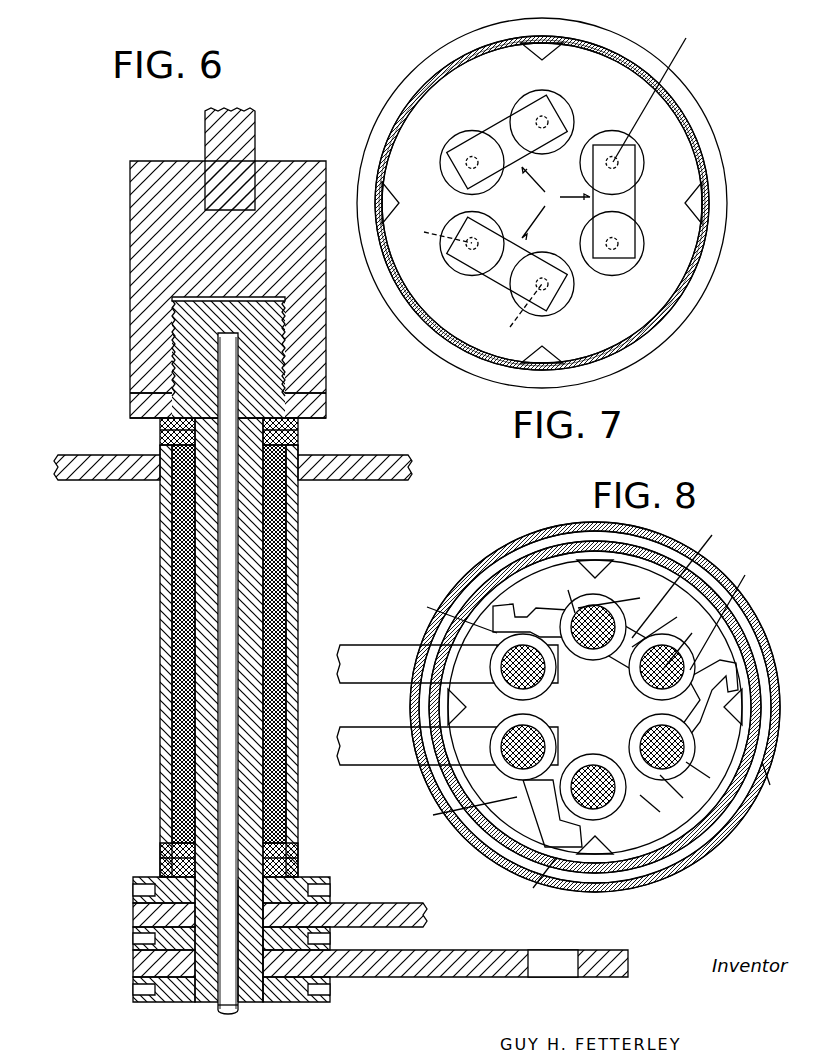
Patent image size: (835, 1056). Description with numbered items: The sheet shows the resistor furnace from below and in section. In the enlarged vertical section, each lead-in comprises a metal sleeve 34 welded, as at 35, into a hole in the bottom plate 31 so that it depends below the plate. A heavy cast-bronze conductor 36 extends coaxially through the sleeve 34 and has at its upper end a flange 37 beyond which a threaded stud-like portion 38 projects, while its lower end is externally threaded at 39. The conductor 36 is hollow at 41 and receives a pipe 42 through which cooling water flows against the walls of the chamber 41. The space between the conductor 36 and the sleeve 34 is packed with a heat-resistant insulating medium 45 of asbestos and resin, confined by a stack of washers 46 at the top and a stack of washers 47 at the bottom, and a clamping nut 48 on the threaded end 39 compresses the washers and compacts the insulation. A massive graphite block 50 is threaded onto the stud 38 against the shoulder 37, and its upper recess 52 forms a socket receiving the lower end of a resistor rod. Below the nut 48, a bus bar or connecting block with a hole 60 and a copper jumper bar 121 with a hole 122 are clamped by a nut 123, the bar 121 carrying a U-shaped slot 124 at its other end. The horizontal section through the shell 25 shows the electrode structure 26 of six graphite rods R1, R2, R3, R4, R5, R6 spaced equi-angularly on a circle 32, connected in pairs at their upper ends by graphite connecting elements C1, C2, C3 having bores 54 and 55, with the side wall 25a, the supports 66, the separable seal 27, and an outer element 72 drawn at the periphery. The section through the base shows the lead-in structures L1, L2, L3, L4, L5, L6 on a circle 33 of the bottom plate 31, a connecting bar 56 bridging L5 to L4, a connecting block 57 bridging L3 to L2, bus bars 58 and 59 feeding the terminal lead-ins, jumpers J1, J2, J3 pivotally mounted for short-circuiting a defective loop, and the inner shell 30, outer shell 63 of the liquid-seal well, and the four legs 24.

In FIG. 6, the cylindrical block 50 is at (160, 161).
In FIG. 6, the coaxial recess 52 is at (207, 165).
In FIG. 6, the threaded stud-like portion 38 is at (172, 337).
In FIG. 6, the hollow interior 41 is at (218, 342).
In FIG. 6, the flange 37 is at (133, 405).
In FIG. 6, the stack of washers 46 is at (160, 442).
In FIG. 6, the bottom plate 31 is at (80, 482).
In FIG. 7, the bottom plate 31 is at (672, 308).
In FIG. 8, the bottom plate 31 is at (692, 836).
In FIG. 6, the weld 35 is at (158, 482).
In FIG. 6, the heavy metal conductor 36 is at (200, 545).
In FIG. 8, the heavy metal conductor 36 is at (686, 645).
In FIG. 6, the metal sleeve 34 is at (162, 606).
In FIG. 8, the metal sleeve 34 is at (707, 775).
In FIG. 6, the insulating medium 45 is at (180, 652).
In FIG. 8, the insulating medium 45 is at (618, 598).
In FIG. 6, the stack of washers 47 is at (163, 858).
In FIG. 6, the clamping nut 48 is at (133, 880).
In FIG. 8, the clamping nut 48 is at (681, 792).
In FIG. 6, the hole 60 is at (190, 915).
In FIG. 6, the nut 123 is at (133, 980).
In FIG. 6, the pipe 42 is at (222, 1008).
In FIG. 6, the hole 122 is at (263, 960).
In FIG. 6, the threaded lower end 39 is at (270, 1005).
In FIG. 6, the heavy copper bar 121 is at (390, 978).
In FIG. 8, the heavy copper bar 121 is at (601, 698).
In FIG. 6, the U-shaped slot 124 is at (548, 958).
In FIG. 8, the U-shaped slot 124 is at (581, 729).
In FIG. 7, the circle 32 is at (661, 92).
In FIG. 7, the internal supports 66 is at (552, 50).
In FIG. 7, the resistor rod R1 is at (472, 243).
In FIG. 7, the resistor rod R2 is at (542, 284).
In FIG. 7, the resistor rod R3 is at (613, 243).
In FIG. 7, the resistor rod R4 is at (613, 162).
In FIG. 7, the resistor rod R5 is at (542, 122).
In FIG. 7, the resistor rod R6 is at (472, 162).
In FIG. 7, the connecting element C1 is at (495, 280).
In FIG. 7, the connecting element C2 is at (636, 190).
In FIG. 7, the connecting element C3 is at (503, 130).
In FIG. 7, the cylindrical side wall 25a is at (702, 140).
In FIG. 8, the cylindrical side wall 25a is at (672, 852).
In FIG. 7, the furnace shell 25 is at (718, 194).
In FIG. 7, the electrode structure 26 is at (556, 203).
In FIG. 7, the separable seal or junction 27 is at (734, 232).
In FIG. 7, the cover 72 is at (718, 262).
In FIG. 8, the cover 72 is at (617, 886).
In FIG. 7, the cylindrical bore 54 is at (435, 233).
In FIG. 7, the cylindrical bore 55 is at (515, 313).
In FIG. 8, the jumper J1 is at (540, 838).
In FIG. 8, the jumper J2 is at (702, 722).
In FIG. 8, the jumper J3 is at (545, 610).
In FIG. 8, the circle 33 is at (680, 580).
In FIG. 8, the legs or standards 24 is at (604, 572).
In FIG. 8, the heavy connecting bar 56 is at (664, 626).
In FIG. 8, the bus bar 59 is at (375, 650).
In FIG. 8, the bus bar 58 is at (375, 760).
In FIG. 8, the lead-in structure L1 is at (547, 727).
In FIG. 8, the lead-in structure L2 is at (593, 767).
In FIG. 8, the lead-in structure L3 is at (650, 737).
In FIG. 8, the lead-in structure L4 is at (643, 677).
In FIG. 8, the lead-in structure L5 is at (597, 660).
In FIG. 8, the lead-in structure L6 is at (553, 677).
In FIG. 8, the heavy connecting block 57 is at (658, 810).
In FIG. 8, the inner cylindrical shell 30 is at (695, 853).
In FIG. 8, the outer cylindrical shell 63 is at (647, 870).